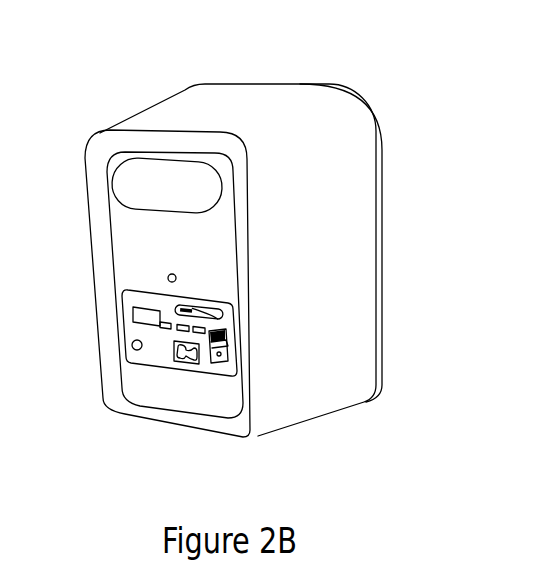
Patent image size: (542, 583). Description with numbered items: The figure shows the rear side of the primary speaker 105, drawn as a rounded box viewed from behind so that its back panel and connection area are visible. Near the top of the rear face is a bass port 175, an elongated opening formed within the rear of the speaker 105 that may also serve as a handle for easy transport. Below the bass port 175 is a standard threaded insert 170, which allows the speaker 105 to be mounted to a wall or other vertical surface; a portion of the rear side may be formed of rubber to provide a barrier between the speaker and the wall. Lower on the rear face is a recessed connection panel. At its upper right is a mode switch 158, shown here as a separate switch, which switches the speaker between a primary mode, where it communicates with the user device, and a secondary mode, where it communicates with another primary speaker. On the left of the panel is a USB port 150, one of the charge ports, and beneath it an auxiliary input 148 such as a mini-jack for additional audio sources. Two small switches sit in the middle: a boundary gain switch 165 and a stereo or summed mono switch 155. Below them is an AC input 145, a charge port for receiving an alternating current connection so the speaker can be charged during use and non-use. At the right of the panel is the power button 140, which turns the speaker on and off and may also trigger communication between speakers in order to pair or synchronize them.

The primary speaker 105 is at (395, 106).
The bass port 175 is at (122, 193).
The threaded insert 170 is at (168, 278).
The mode switch 158 is at (226, 318).
The USB port 150 is at (133, 312).
The auxiliary input 148 is at (131, 345).
The boundary gain switch 165 is at (165, 330).
The stereo or summed mono switch 155 is at (182, 332).
The AC input 145 is at (187, 352).
The power button 140 is at (228, 341).